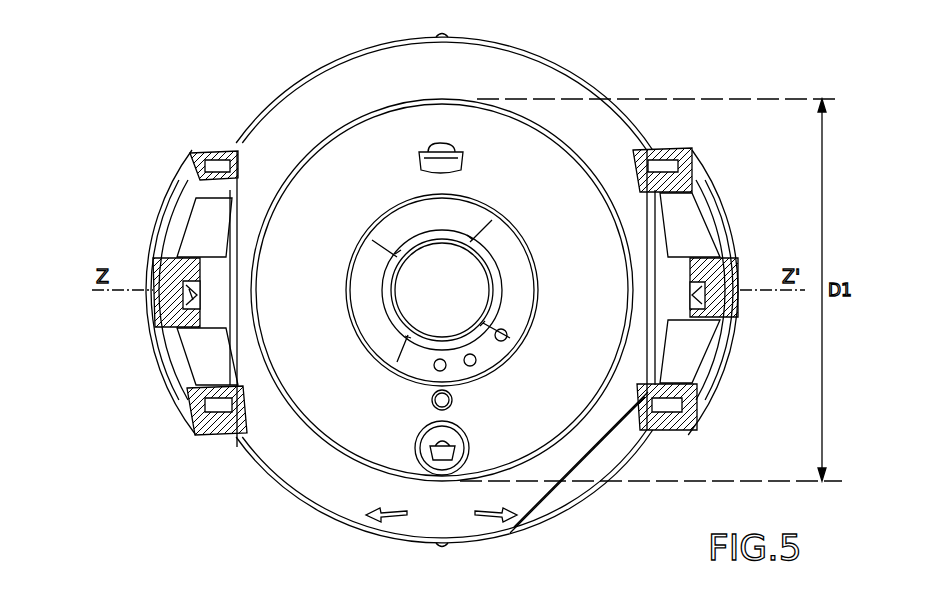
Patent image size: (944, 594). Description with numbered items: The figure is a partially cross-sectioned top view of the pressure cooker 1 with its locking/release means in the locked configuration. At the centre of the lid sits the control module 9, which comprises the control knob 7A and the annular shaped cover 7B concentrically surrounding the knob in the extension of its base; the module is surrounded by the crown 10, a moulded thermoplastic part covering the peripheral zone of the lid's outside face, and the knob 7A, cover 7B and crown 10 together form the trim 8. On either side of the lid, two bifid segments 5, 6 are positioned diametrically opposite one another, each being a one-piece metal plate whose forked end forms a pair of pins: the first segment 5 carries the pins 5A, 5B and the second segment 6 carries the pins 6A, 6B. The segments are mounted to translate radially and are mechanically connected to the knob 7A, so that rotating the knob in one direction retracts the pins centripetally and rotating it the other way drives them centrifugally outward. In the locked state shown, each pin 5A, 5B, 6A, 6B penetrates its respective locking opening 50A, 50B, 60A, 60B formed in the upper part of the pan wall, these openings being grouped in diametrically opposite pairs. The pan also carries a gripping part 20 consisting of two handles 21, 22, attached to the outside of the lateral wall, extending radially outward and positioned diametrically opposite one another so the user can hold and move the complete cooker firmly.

The pressure cooker 1 is at (640, 88).
The bifid segment 5 is at (657, 367).
The pin 5A is at (678, 348).
The pin 5B is at (680, 215).
The bifid segment 6 is at (247, 372).
The pin 6A is at (202, 343).
The pin 6B is at (200, 235).
The control knob 7A is at (428, 258).
The annular shaped cover 7B is at (328, 172).
The trim 8 is at (353, 433).
The control module 9 is at (505, 248).
The crown 10 is at (493, 75).
The gripping part 20 is at (183, 427).
The handle 21 is at (155, 302).
The handle 22 is at (718, 272).
The locking opening 50A is at (703, 390).
The locking opening 50B is at (690, 178).
The locking opening 60A is at (187, 403).
The locking opening 60B is at (190, 178).